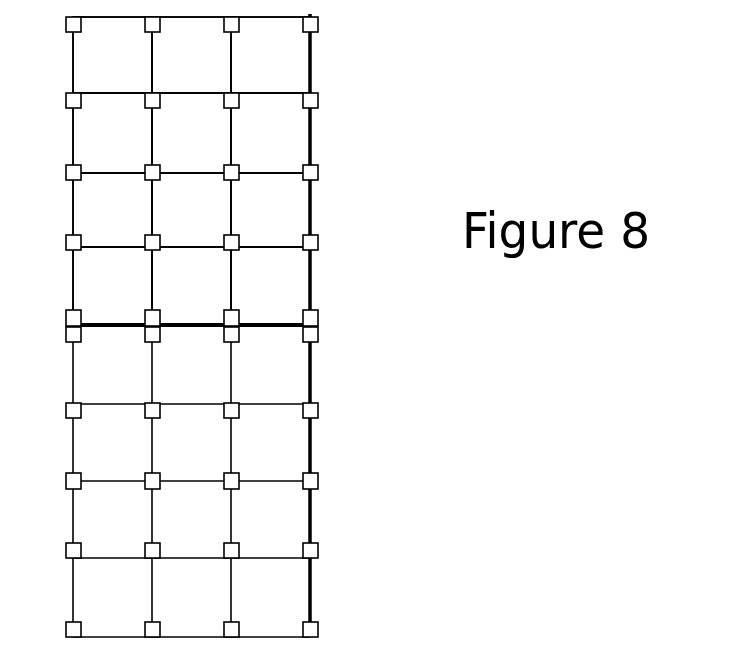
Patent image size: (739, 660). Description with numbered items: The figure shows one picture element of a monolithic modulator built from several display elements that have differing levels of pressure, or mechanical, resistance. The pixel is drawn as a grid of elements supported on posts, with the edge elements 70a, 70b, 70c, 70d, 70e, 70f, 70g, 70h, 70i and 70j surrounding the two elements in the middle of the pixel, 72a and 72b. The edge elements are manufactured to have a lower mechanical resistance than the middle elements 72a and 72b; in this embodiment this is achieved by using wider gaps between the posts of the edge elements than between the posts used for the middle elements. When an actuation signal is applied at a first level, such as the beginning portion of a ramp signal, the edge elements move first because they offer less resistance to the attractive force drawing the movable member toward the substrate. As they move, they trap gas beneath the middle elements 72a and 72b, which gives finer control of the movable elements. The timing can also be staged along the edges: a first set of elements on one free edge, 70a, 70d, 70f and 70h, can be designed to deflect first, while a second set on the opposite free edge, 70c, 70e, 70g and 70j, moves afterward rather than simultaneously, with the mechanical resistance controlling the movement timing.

The edge element 70a is at (112, 55).
The edge element 70b is at (191, 55).
The edge element 70c is at (270, 55).
The edge element 70d is at (112, 133).
The edge element 70e is at (270, 133).
The edge element 70f is at (112, 210).
The edge element 70g is at (270, 210).
The edge element 70h is at (112, 286).
The edge element 70i is at (191, 286).
The edge element 70j is at (270, 286).
The middle element 72a is at (191, 133).
The middle element 72b is at (191, 210).